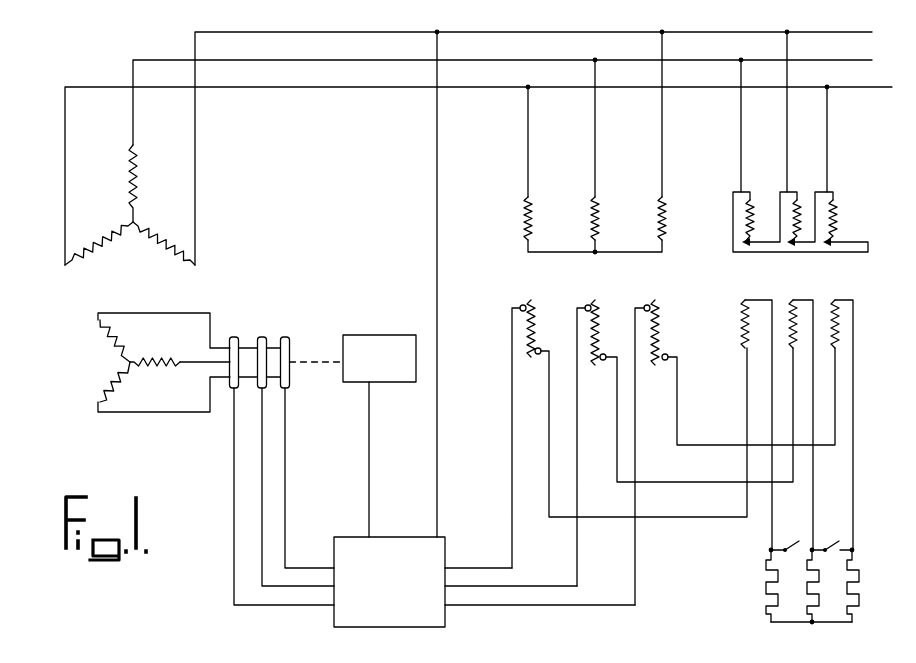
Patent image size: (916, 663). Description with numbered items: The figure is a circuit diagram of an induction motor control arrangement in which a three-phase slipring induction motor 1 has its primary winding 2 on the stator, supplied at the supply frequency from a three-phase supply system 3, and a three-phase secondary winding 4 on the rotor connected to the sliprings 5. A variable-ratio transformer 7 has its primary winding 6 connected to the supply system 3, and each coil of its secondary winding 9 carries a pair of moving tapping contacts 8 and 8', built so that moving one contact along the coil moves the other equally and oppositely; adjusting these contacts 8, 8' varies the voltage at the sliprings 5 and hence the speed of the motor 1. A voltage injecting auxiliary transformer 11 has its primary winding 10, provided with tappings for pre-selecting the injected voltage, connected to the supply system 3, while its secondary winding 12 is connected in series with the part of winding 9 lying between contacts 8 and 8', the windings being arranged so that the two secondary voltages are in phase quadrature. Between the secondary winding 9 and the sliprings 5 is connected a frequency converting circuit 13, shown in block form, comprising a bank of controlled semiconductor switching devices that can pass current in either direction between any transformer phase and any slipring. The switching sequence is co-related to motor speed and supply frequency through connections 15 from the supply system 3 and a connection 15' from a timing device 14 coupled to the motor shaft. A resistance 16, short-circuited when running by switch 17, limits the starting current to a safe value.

The slipring induction motor 1 is at (118, 292).
The primary winding 2 is at (96, 215).
The 3-phase supply system 3 is at (484, 147).
The secondary winding 4 is at (103, 378).
The sliprings 5 is at (256, 334).
The primary winding 6 is at (490, 227).
The variable-ratio transformer 7 is at (503, 289).
The moving tapping contact 8 is at (634, 299).
The moving tapping contact 8' is at (682, 365).
The secondary winding 9 is at (481, 354).
The primary winding 10 is at (859, 227).
The voltage injecting auxiliary transformer 11 is at (836, 281).
The secondary winding 12 is at (861, 334).
The frequency converting circuit 13 is at (389, 582).
The timing device 14 is at (353, 358).
The connections 15 is at (421, 284).
The connections 15' is at (389, 459).
The resistance 16 is at (797, 587).
The switch 17 is at (793, 556).